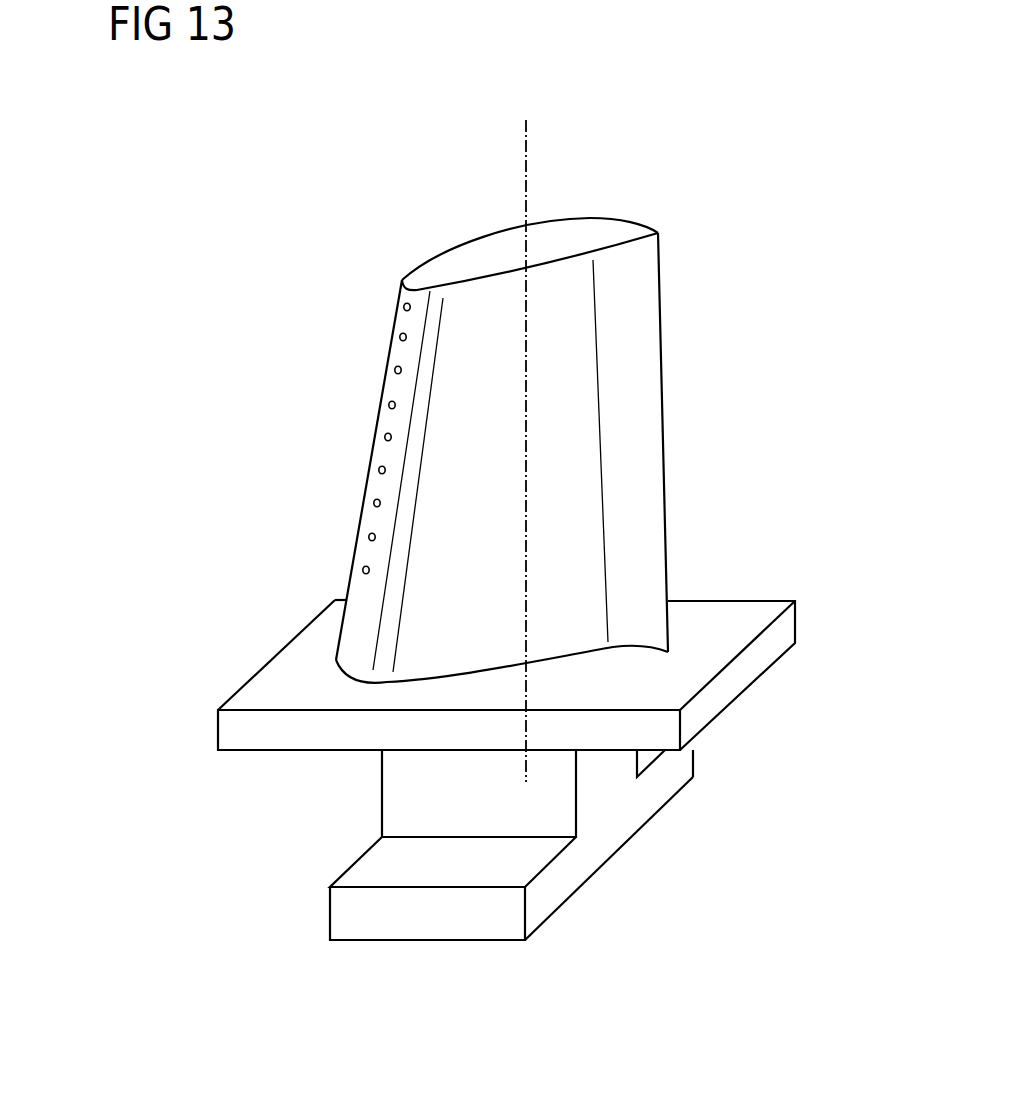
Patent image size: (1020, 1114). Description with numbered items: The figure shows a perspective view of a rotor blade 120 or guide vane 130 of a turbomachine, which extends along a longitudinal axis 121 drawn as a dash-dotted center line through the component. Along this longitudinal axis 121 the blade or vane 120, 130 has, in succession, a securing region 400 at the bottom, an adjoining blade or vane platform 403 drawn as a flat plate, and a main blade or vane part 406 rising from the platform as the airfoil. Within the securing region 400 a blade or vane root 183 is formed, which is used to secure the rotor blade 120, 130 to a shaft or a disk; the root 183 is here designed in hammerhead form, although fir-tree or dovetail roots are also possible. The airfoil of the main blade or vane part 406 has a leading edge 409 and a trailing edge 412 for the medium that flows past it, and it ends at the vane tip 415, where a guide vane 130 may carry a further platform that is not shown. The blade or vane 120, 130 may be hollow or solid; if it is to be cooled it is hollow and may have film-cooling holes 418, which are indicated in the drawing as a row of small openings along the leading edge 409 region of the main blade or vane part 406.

The rotor blade 120 is at (436, 408).
The guide vane 130 is at (257, 462).
The longitudinal axis 121 is at (526, 162).
The vane tip 415 is at (430, 272).
The leading edge 409 is at (377, 372).
The trailing edge 412 is at (673, 405).
The main blade or vane part 406 is at (360, 592).
The film-cooling holes 418 is at (393, 370).
The blade or vane platform 403 is at (757, 652).
The securing region 400 is at (645, 813).
The blade or vane root 183 is at (370, 868).